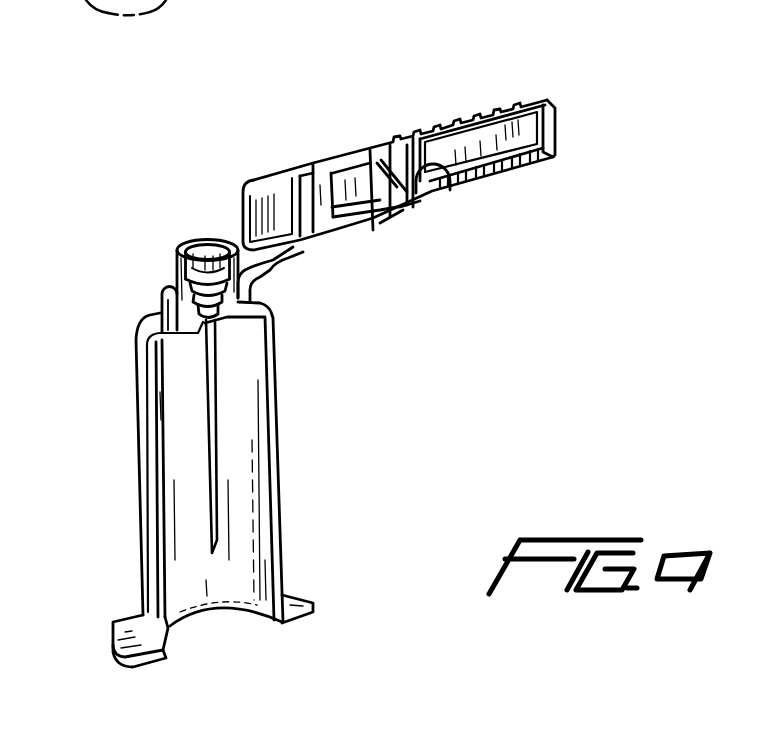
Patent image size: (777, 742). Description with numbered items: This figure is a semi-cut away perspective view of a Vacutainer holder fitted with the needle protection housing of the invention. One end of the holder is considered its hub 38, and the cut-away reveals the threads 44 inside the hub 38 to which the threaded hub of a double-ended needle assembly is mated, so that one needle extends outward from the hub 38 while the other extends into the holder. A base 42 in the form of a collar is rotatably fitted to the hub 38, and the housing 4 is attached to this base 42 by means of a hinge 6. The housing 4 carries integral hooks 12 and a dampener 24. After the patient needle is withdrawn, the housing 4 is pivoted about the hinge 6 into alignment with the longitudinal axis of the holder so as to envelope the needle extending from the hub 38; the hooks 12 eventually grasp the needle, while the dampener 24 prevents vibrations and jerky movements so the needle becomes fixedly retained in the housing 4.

The housing 4 is at (410, 126).
The hinge 6 is at (272, 270).
The integral hooks 12 is at (312, 160).
The dampener 24 is at (452, 183).
The hub 38 is at (176, 267).
The base 42 is at (161, 305).
The threads 44 is at (273, 316).